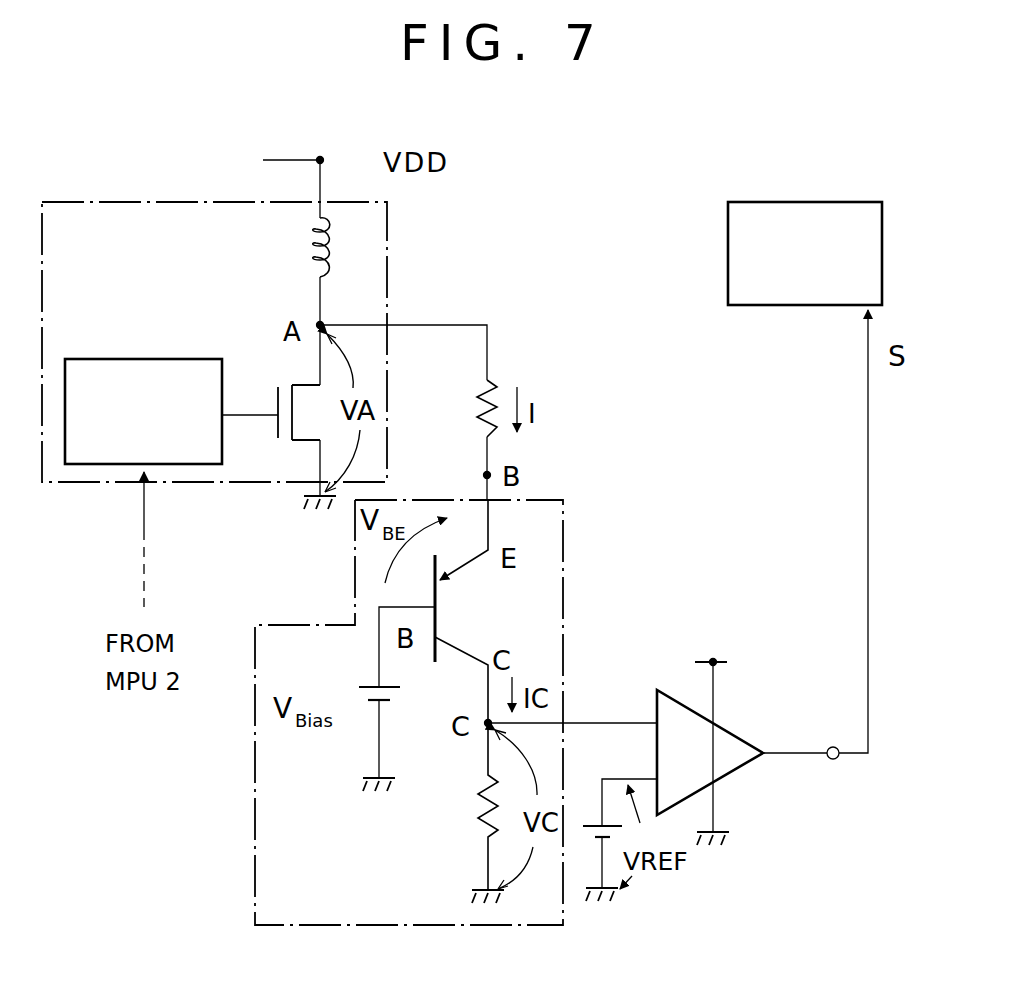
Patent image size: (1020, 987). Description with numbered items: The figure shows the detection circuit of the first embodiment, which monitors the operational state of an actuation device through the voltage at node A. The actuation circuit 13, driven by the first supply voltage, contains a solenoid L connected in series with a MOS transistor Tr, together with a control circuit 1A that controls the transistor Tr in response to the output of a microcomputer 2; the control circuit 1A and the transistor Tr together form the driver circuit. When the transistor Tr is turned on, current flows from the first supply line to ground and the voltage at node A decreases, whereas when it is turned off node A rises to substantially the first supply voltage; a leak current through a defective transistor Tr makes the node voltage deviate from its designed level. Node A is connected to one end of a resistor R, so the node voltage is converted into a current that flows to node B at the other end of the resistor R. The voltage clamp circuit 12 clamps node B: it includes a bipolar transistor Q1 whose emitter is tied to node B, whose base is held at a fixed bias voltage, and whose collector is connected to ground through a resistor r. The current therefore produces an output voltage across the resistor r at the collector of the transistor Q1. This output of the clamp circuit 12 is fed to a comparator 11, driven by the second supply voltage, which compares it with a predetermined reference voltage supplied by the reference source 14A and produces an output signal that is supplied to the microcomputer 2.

The actuation circuit 13 is at (72, 201).
The control circuit 1A is at (115, 359).
The solenoid L is at (313, 250).
The MOS transistor Tr is at (285, 446).
The resistor R is at (469, 408).
The voltage clamp circuit 12 is at (564, 518).
The bipolar transistor Q1 is at (468, 621).
The resistor r is at (473, 806).
The comparator 11 is at (667, 690).
The reference voltage source 14A is at (592, 808).
The microcomputer 2 is at (795, 202).